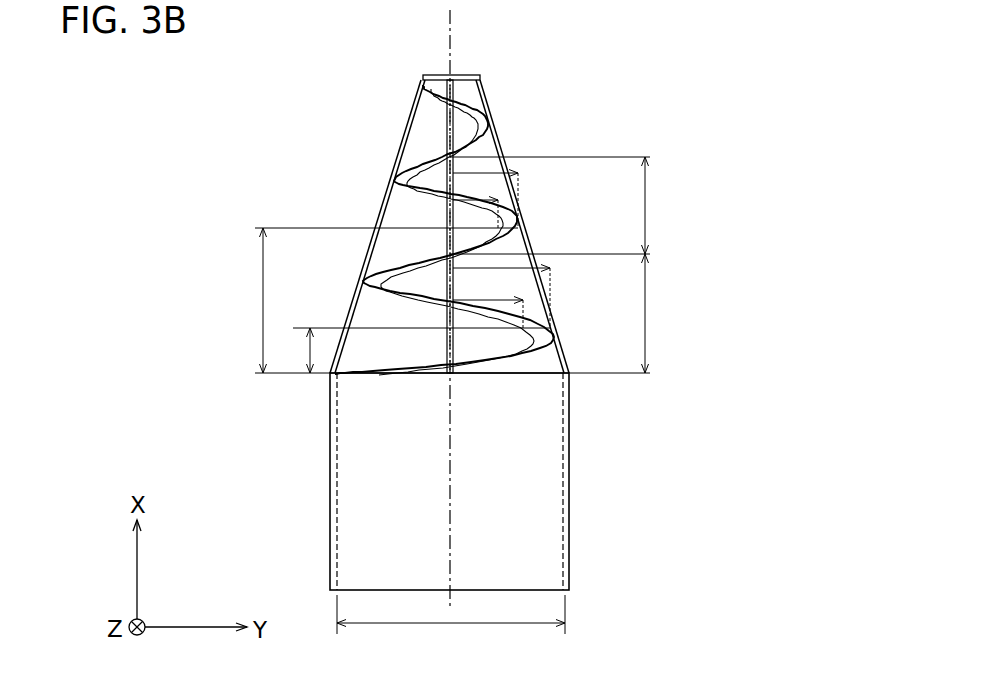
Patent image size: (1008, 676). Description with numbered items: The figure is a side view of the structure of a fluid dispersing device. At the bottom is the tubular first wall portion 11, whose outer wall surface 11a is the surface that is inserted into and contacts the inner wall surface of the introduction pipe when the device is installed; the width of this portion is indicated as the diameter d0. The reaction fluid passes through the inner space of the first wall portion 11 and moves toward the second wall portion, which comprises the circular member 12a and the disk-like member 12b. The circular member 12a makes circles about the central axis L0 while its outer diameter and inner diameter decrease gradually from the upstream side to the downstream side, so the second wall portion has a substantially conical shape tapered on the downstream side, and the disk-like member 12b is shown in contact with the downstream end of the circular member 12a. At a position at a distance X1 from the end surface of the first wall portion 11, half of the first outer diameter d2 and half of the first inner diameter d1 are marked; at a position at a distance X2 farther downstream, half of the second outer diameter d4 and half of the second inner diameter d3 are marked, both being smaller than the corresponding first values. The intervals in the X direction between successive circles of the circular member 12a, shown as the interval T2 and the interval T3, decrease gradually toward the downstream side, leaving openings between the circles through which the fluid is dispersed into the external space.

The first wall portion 11 is at (569, 473).
The outer wall surface 11a is at (569, 528).
The circular member 12a is at (376, 300).
The disk-like member 12b is at (437, 75).
The central axis L0 is at (454, 30).
The body diameter d0 is at (451, 624).
The first inner diameter d1 is at (472, 300).
The first outer diameter d2 is at (503, 264).
The second inner diameter d3 is at (482, 194).
The second outer diameter d4 is at (490, 167).
The interval T2 is at (657, 313).
The interval T3 is at (657, 205).
The distance X1 is at (296, 350).
The distance X2 is at (250, 300).